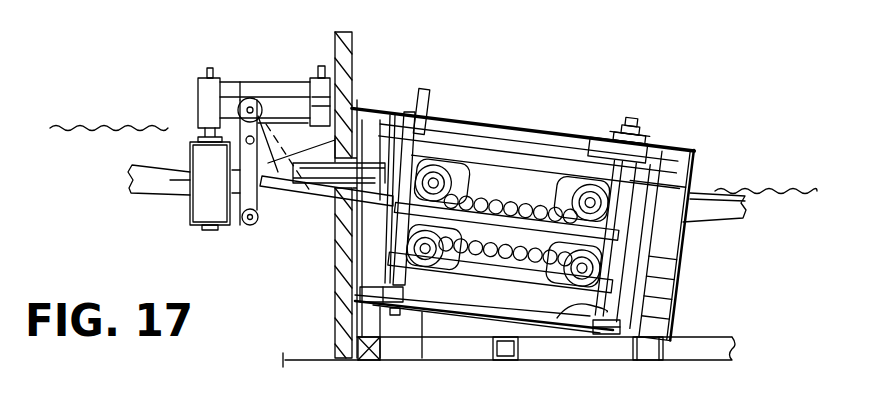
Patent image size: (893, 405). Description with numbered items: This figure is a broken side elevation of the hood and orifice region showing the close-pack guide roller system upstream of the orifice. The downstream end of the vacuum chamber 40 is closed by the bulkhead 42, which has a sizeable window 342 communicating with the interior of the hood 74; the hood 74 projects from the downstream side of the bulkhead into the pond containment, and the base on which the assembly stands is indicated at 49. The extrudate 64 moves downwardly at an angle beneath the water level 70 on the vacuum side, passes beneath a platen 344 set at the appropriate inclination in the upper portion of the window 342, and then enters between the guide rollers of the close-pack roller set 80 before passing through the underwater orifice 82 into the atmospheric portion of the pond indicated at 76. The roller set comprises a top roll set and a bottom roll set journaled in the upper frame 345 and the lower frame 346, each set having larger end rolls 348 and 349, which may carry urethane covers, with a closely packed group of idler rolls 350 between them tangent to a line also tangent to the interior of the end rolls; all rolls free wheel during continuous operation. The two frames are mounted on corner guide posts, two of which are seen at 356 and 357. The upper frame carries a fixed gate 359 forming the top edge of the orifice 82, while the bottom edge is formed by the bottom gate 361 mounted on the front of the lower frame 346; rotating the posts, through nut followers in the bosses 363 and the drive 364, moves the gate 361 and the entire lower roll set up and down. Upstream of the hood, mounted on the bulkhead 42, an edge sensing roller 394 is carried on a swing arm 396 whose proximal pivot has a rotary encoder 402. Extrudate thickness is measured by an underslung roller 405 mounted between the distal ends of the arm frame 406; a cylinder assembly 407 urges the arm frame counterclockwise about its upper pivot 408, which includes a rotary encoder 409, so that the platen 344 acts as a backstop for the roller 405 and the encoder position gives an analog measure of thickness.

The vacuum chamber 40 is at (210, 38).
The bulkhead 42 is at (353, 56).
The base floor 49 is at (300, 360).
The extrudate 64 is at (147, 183).
The vacuum chamber portion of the pond 70 is at (108, 124).
The hood 74 is at (708, 151).
The atmospheric portion of the pond 76 is at (792, 188).
The close-pack roller set 80 is at (517, 162).
The orifice 82 is at (662, 238).
The window 342 is at (330, 262).
The platen 344 is at (372, 205).
The upper frame 345 is at (485, 173).
The lower frame 346 is at (510, 268).
The end roll 348 is at (442, 152).
The end roll 349 is at (592, 178).
The idler rolls 350 is at (537, 200).
The corner guide post 356 is at (600, 315).
The corner guide post 357 is at (417, 100).
The fixed gate 359 is at (675, 160).
The bottom gate 361 is at (652, 278).
The bosses 363 is at (610, 270).
The drive 364 is at (643, 120).
The extrudate edge sensing roller 394 is at (203, 208).
The swing arm 396 is at (237, 82).
The rotary encoder 402 is at (316, 88).
The underslung roller 405 is at (245, 226).
The arm frame 406 is at (248, 170).
The cylinder assembly 407 is at (261, 128).
The upper pivot 408 is at (216, 112).
The rotary encoder 409 is at (220, 120).